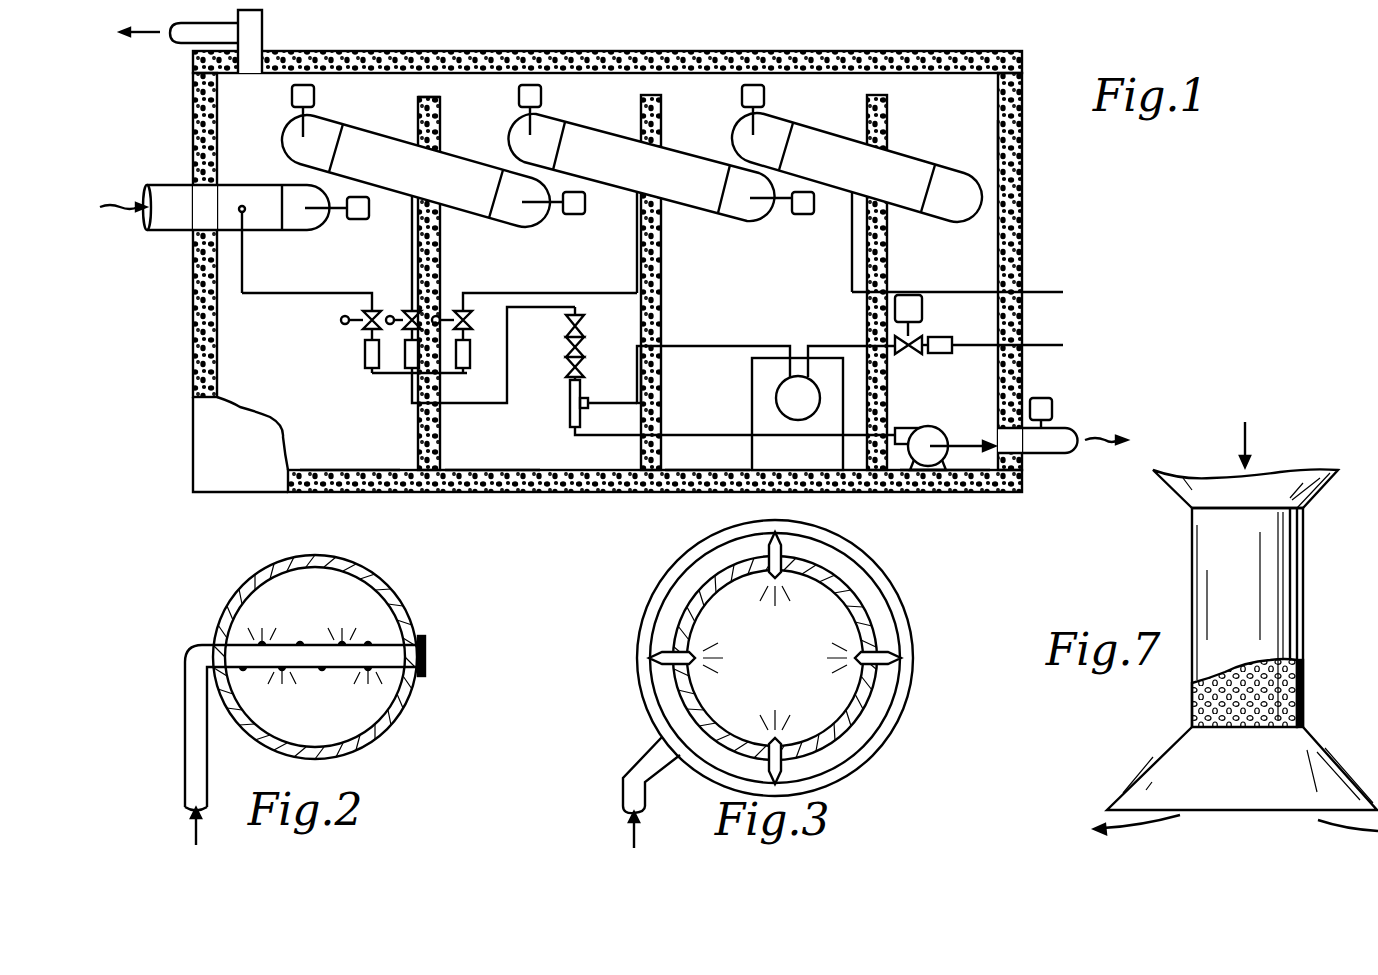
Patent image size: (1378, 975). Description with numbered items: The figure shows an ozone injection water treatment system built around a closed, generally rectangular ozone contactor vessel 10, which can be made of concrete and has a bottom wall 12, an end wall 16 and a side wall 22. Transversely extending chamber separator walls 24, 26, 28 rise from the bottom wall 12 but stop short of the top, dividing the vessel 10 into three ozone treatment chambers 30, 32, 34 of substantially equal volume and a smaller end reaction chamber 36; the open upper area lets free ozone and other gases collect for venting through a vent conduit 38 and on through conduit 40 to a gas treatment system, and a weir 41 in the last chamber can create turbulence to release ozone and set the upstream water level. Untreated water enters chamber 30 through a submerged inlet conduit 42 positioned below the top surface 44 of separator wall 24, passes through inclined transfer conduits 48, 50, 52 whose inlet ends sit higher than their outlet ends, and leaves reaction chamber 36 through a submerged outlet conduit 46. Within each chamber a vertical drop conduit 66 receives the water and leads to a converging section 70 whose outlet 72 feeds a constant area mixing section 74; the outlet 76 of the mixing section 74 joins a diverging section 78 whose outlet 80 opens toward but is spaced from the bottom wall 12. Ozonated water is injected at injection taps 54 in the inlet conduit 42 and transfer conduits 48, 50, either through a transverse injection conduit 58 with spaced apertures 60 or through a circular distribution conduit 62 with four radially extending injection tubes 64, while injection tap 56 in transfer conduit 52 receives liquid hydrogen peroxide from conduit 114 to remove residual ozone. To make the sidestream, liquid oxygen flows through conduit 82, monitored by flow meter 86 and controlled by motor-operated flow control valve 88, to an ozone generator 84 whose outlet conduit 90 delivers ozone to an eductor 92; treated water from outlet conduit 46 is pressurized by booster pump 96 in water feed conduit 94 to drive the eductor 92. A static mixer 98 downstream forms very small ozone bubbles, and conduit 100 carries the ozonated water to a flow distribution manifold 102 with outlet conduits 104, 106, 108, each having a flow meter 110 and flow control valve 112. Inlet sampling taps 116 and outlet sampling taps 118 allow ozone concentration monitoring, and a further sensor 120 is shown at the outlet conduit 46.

In FIG. 1, the ozone contactor vessel 10 is at (1015, 222).
In FIG. 1, the bottom wall 12 is at (810, 462).
In FIG. 1, the end wall 16 is at (193, 337).
In FIG. 1, the side wall 22 is at (212, 455).
In FIG. 1, the chamber separator wall 24 is at (441, 266).
In FIG. 1, the chamber separator wall 26 is at (661, 266).
In FIG. 1, the chamber separator wall 28 is at (887, 266).
In FIG. 1, the treatment chamber 30 is at (360, 460).
In FIG. 1, the treatment chamber 32 is at (478, 458).
In FIG. 1, the treatment chamber 34 is at (700, 460).
In FIG. 1, the reaction chamber 36 is at (958, 462).
In FIG. 1, the vent conduit 38 is at (263, 26).
In FIG. 1, the conduit 40 is at (186, 38).
In FIG. 1, the weir 41 is at (988, 142).
In FIG. 1, the inlet conduit 42 is at (180, 186).
In FIG. 2, the inlet conduit 42 is at (366, 578).
In FIG. 3, the inlet conduit 42 is at (695, 592).
In FIG. 1, the top surface 44 is at (430, 97).
In FIG. 1, the outlet conduit 46 is at (1060, 453).
In FIG. 1, the transfer conduit 48 is at (352, 142).
In FIG. 1, the transfer conduit 50 is at (590, 139).
In FIG. 1, the transfer conduit 52 is at (802, 138).
In FIG. 1, the injection tap 54 is at (242, 205).
In FIG. 2, the injection tap 54 is at (212, 644).
In FIG. 1, the injection tap 56 is at (854, 168).
In FIG. 2, the injection conduit 58 is at (370, 643).
In FIG. 2, the spaced apertures 60 is at (300, 645).
In FIG. 3, the circular distribution conduit 62 is at (868, 571).
In FIG. 3, the injection tubes 64 is at (790, 545).
In FIG. 7, the drop conduit 66 is at (1305, 558).
In FIG. 7, the converging section 70 is at (1300, 490).
In FIG. 7, the outlet 72 is at (1188, 510).
In FIG. 7, the mixing section 74 is at (1207, 546).
In FIG. 7, the outlet 76 is at (1192, 725).
In FIG. 7, the diverging section 78 is at (1185, 757).
In FIG. 7, the outlet 80 is at (1248, 812).
In FIG. 1, the liquid oxygen conduit 82 is at (1043, 346).
In FIG. 1, the ozone generator 84 is at (752, 418).
In FIG. 1, the flow meter 86 is at (940, 354).
In FIG. 1, the motor-operated flow control valve 88 is at (905, 355).
In FIG. 1, the outlet conduit 90 is at (688, 346).
In FIG. 1, the eductor 92 is at (568, 401).
In FIG. 1, the water feed conduit 94 is at (970, 448).
In FIG. 1, the booster pump 96 is at (925, 430).
In FIG. 1, the static mixer 98 is at (585, 336).
In FIG. 1, the conduit 100 is at (500, 403).
In FIG. 1, the flow distribution manifold 102 is at (395, 378).
In FIG. 1, the outlet conduit 104 is at (263, 293).
In FIG. 1, the outlet conduit 106 is at (410, 275).
In FIG. 1, the outlet conduit 108 is at (527, 293).
In FIG. 1, the flow meter 110 is at (367, 362).
In FIG. 1, the flow control valve 112 is at (341, 320).
In FIG. 1, the hydrogen peroxide conduit 114 is at (1035, 292).
In FIG. 1, the inlet sampling tap 116 is at (358, 220).
In FIG. 1, the outlet sampling tap 118 is at (292, 96).
In FIG. 1, the sensor 120 is at (1053, 409).